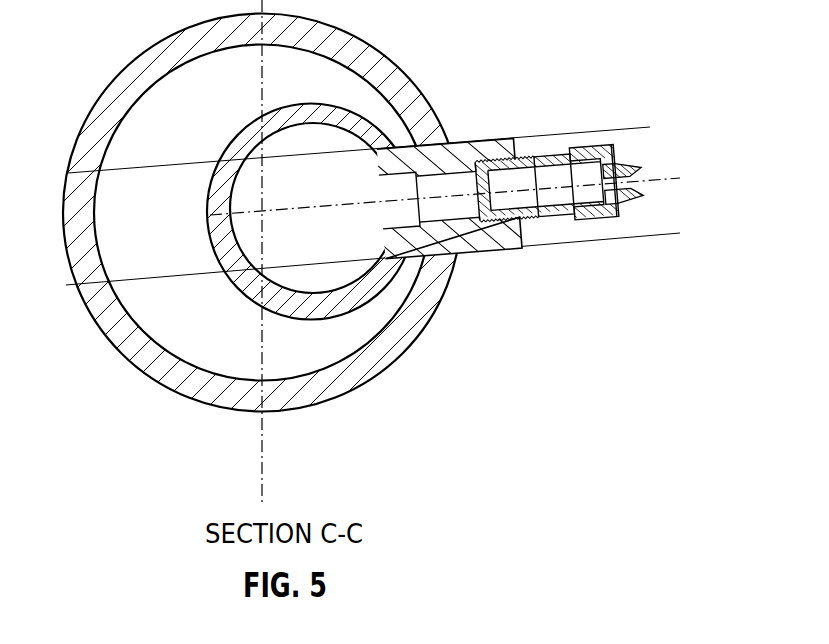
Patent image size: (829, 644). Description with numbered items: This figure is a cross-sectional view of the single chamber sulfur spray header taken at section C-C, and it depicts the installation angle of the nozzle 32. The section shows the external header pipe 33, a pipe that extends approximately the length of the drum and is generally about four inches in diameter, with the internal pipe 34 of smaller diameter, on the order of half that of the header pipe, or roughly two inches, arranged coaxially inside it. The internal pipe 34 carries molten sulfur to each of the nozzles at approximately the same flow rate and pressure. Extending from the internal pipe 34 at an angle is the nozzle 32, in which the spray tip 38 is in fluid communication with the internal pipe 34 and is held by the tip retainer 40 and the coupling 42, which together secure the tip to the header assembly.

The nozzle 32 is at (652, 57).
The external header pipe 33 is at (96, 322).
The internal pipe 34 is at (250, 299).
The spray tip 38 is at (631, 203).
The tip retainer 40 is at (571, 196).
The coupling 42 is at (515, 133).